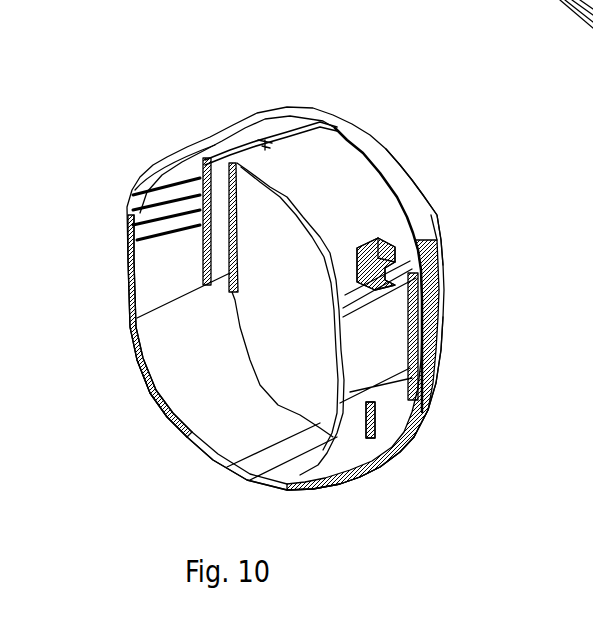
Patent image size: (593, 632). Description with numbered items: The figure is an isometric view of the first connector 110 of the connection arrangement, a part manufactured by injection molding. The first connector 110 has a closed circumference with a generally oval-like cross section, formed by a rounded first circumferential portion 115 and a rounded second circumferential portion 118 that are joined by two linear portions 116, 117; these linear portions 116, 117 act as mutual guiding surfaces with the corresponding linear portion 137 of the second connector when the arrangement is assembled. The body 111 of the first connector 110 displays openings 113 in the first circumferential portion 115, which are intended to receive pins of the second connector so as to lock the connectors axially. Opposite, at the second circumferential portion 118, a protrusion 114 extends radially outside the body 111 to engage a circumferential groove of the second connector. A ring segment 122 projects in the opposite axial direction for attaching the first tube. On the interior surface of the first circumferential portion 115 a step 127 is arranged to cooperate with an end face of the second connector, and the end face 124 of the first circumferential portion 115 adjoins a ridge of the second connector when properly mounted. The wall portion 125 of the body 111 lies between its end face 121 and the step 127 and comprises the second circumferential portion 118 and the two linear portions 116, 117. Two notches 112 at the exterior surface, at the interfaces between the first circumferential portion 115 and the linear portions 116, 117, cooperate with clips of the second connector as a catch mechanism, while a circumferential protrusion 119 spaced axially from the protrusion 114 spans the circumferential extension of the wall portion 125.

The first connector 110 is at (189, 106).
The body 111 is at (440, 385).
The notches 112 is at (380, 248).
The openings 113 is at (265, 143).
The protrusion 114 is at (370, 437).
The first circumferential portion 115 is at (334, 147).
The linear portion 116 is at (111, 294).
The linear portion 117 is at (440, 345).
The second circumferential portion 118 is at (214, 463).
The circumferential protrusion 119 is at (410, 424).
The end face 121 is at (164, 411).
The ring segment 122 is at (389, 155).
The end face 124 is at (293, 192).
The wall portion 125 is at (382, 371).
The step 127 is at (197, 169).
The linear portion 137 is at (528, 0).